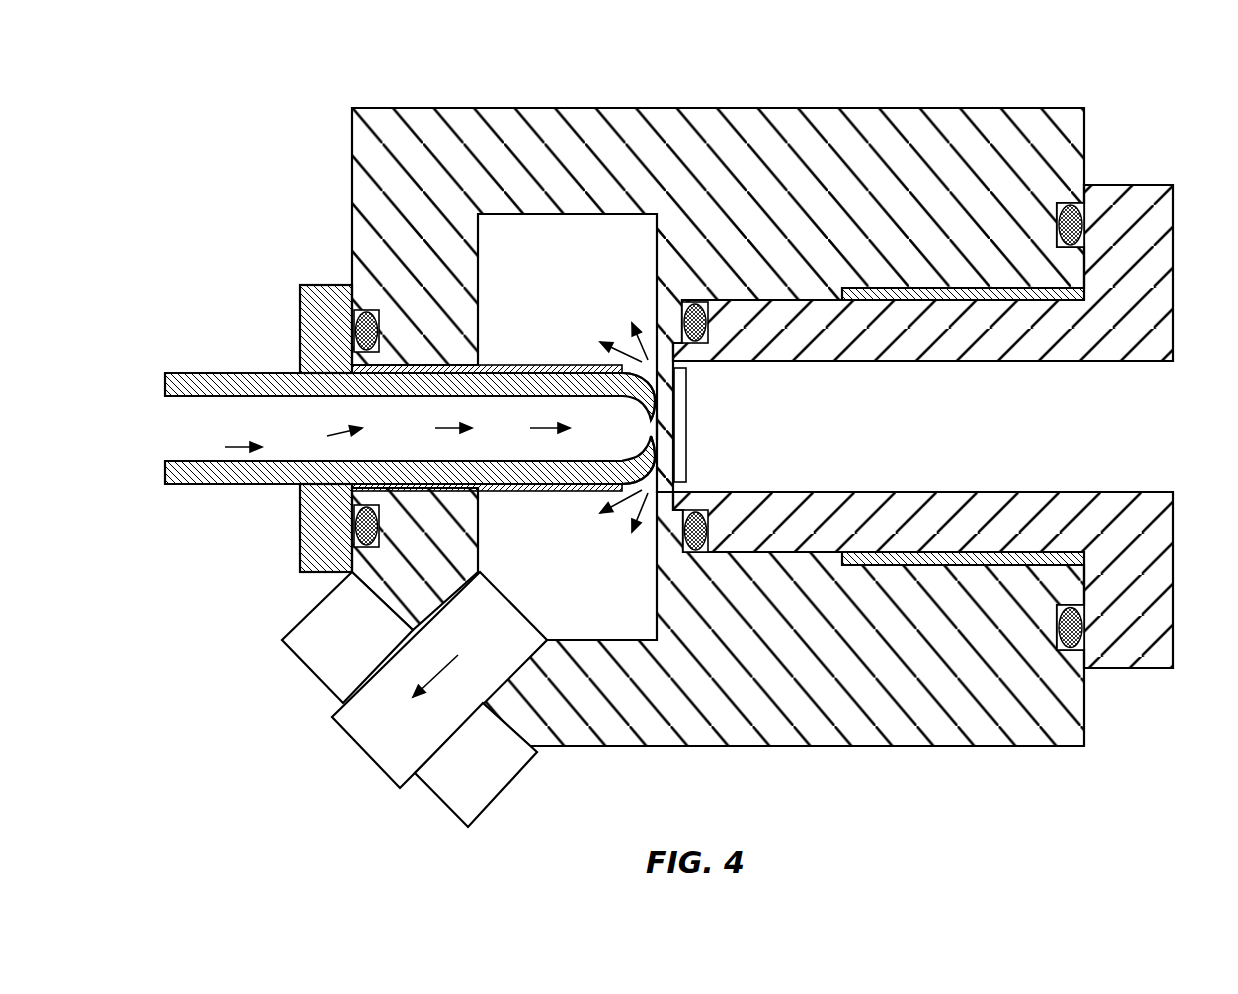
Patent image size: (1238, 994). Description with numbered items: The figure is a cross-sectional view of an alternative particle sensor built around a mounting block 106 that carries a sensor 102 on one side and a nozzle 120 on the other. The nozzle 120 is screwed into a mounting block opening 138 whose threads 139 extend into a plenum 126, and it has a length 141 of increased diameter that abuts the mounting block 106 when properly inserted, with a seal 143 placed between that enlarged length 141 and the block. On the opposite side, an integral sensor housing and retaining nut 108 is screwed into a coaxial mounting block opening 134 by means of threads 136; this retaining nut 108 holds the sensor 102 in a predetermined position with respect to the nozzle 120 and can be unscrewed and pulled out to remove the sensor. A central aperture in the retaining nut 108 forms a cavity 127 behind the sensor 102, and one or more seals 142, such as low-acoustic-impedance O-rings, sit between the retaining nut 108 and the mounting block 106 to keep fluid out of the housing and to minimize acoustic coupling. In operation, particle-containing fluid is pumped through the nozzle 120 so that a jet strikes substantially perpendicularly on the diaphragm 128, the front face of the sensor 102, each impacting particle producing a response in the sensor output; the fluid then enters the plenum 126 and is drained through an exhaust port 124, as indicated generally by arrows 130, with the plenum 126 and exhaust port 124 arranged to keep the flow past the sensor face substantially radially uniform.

The mounting block 106 is at (936, 128).
The integral sensor housing and retaining nut 108 is at (1150, 210).
The seal 142 is at (1070, 205).
The seal 143 is at (368, 318).
The length of increased diameter 141 is at (310, 335).
The nozzle 120 is at (278, 480).
The mounting block opening 138 is at (444, 482).
The threads 139 is at (598, 485).
The arrows 130 is at (645, 500).
The plenum 126 is at (567, 427).
The cavity 127 is at (923, 426).
The sensor 102 is at (686, 416).
The diaphragm 128 is at (662, 432).
The mounting block opening 134 is at (880, 302).
The threads 136 is at (1036, 302).
The exhaust port 124 is at (408, 787).